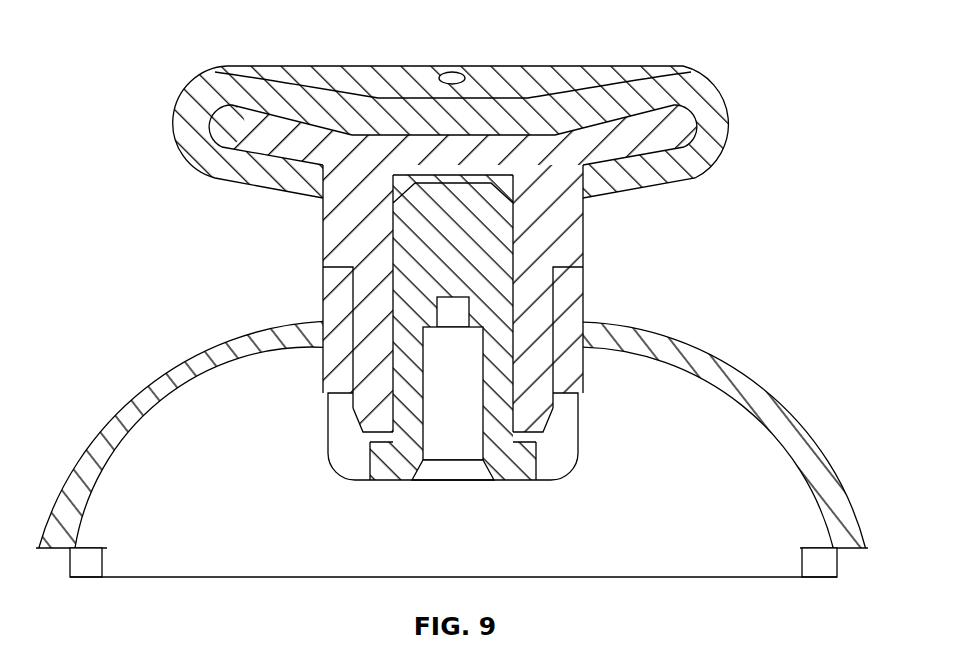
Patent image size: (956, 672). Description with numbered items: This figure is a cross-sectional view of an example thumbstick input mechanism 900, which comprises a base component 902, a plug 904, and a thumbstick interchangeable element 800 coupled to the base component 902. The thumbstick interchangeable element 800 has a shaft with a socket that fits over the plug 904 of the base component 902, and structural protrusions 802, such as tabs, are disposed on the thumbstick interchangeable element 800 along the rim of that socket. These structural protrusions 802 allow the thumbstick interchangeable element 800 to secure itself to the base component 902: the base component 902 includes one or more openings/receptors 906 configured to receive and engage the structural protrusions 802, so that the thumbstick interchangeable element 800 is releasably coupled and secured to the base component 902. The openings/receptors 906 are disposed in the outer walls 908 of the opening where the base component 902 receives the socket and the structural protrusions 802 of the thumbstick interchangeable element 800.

The thumbstick input mechanism 900 is at (448, 38).
The thumbstick interchangeable element 800 is at (177, 125).
The structural protrusions 802 is at (538, 402).
The base component 902 is at (737, 380).
The plug 904 is at (453, 327).
The openings/receptors 906 is at (355, 420).
The outer walls 908 is at (332, 294).